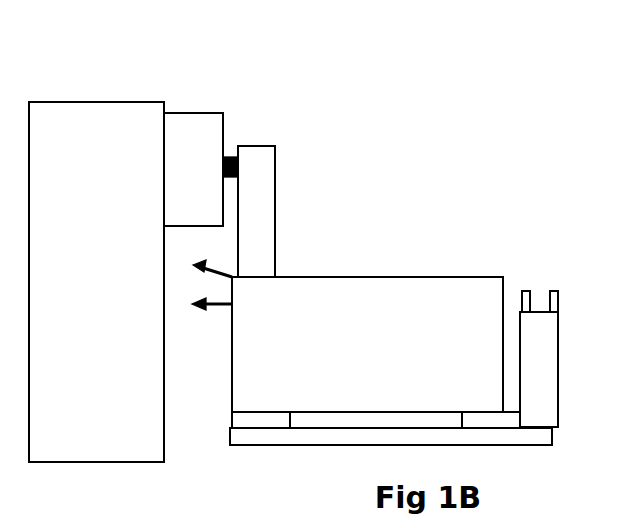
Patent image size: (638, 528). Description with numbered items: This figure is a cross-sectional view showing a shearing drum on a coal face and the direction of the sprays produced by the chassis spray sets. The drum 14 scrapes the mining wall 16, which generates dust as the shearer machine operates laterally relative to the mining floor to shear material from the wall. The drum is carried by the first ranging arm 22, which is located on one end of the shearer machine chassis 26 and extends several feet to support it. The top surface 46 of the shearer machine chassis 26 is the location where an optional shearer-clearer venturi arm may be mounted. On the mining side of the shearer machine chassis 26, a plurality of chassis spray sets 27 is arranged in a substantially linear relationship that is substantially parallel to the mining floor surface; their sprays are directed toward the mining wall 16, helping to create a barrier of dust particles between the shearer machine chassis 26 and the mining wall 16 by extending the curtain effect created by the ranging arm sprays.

The mining wall 16 is at (100, 102).
The drum 14 is at (193, 112).
The first ranging arm 22 is at (278, 212).
The shearer machine chassis 26 is at (458, 293).
The top surface 46 is at (368, 275).
The chassis spray sets 27 is at (218, 312).